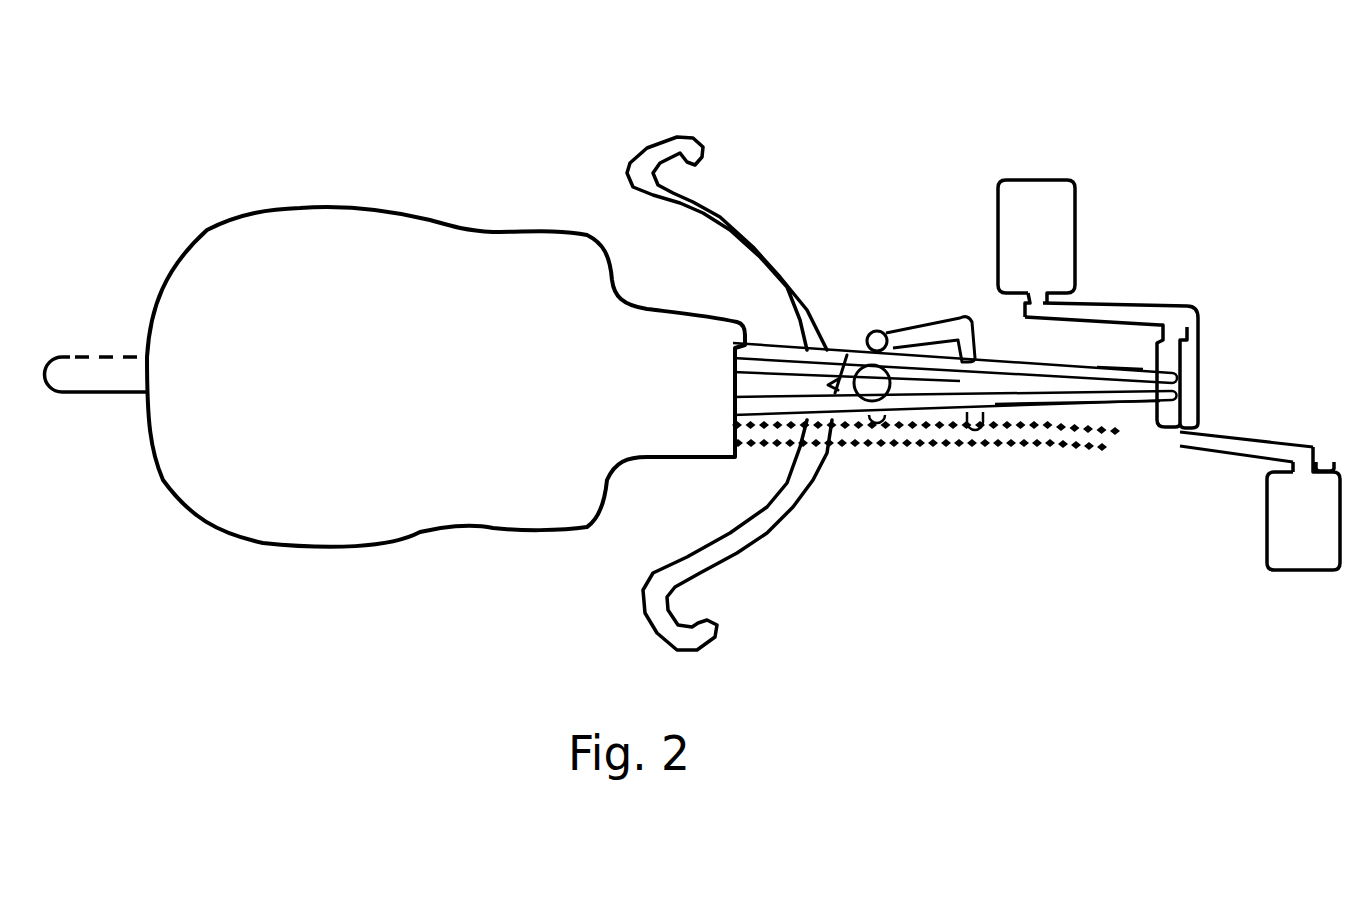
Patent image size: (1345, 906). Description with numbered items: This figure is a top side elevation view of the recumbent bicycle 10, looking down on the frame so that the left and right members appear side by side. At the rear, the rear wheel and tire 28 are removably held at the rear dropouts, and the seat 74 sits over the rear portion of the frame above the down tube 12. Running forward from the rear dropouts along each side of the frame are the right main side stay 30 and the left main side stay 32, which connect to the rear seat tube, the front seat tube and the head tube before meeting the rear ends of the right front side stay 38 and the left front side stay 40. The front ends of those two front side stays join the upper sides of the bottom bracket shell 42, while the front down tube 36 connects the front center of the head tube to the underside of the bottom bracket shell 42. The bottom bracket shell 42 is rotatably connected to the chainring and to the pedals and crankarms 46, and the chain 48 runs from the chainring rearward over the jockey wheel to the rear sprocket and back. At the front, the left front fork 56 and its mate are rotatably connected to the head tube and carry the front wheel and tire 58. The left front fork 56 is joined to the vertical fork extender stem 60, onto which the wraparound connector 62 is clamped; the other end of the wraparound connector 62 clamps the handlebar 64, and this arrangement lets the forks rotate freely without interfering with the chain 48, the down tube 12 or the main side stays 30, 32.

The recumbent bicycle 10 is at (521, 118).
The down tube 12 is at (749, 402).
The rear wheel and tire 28 is at (61, 354).
The right main side stay 30 is at (850, 387).
The left main side stay 32 is at (765, 342).
The front down tube 36 is at (930, 385).
The right front side stay 38 is at (1015, 408).
The left front side stay 40 is at (1000, 358).
The bottom bracket shell 42 is at (1199, 372).
The pedals and crankarms 46 is at (1075, 242).
The chain 48 is at (1088, 450).
The left front fork 56 is at (942, 320).
The front wheel and tire 58 is at (1107, 365).
The vertical fork extender stem 60 is at (878, 338).
The wraparound connector 62 is at (853, 337).
The handlebar 64 is at (735, 222).
The seat 74 is at (300, 208).